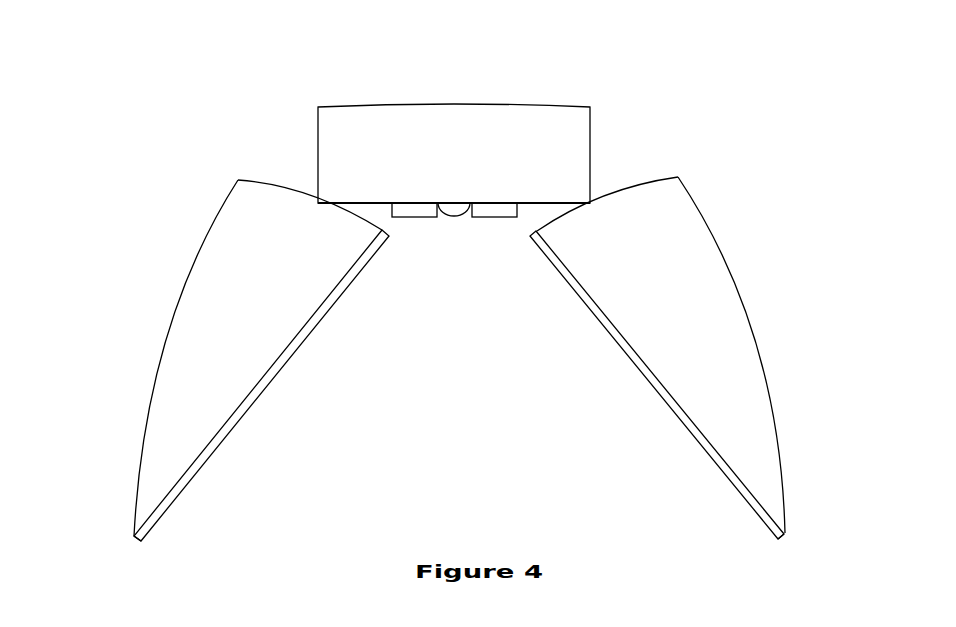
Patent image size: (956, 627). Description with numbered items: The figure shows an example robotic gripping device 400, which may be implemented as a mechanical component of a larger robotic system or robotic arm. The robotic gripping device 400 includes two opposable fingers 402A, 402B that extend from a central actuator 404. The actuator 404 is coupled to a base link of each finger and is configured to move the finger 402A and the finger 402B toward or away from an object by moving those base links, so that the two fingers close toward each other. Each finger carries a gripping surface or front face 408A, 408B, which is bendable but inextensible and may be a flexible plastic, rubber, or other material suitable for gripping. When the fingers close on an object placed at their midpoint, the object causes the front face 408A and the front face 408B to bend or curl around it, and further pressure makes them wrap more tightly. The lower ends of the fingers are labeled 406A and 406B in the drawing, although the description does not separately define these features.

The robotic gripping device 400 is at (340, 58).
The finger 402A is at (98, 221).
The finger 402B is at (790, 223).
The actuator 404 is at (440, 262).
The first wing tip 406A is at (134, 537).
The second wing tip 406B is at (788, 532).
The front face 408A is at (252, 408).
The front face 408B is at (665, 403).